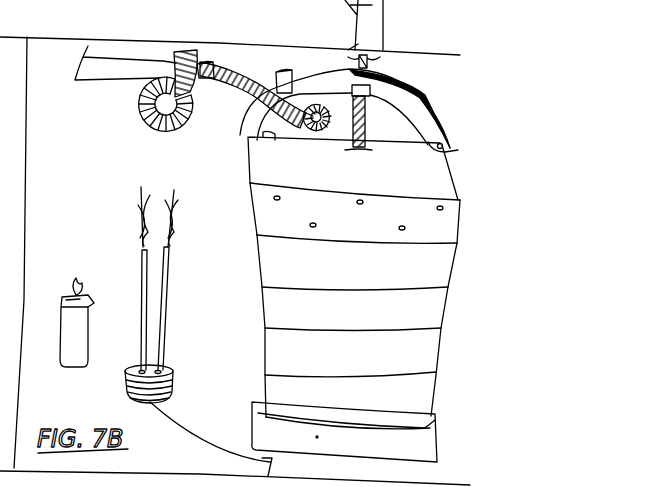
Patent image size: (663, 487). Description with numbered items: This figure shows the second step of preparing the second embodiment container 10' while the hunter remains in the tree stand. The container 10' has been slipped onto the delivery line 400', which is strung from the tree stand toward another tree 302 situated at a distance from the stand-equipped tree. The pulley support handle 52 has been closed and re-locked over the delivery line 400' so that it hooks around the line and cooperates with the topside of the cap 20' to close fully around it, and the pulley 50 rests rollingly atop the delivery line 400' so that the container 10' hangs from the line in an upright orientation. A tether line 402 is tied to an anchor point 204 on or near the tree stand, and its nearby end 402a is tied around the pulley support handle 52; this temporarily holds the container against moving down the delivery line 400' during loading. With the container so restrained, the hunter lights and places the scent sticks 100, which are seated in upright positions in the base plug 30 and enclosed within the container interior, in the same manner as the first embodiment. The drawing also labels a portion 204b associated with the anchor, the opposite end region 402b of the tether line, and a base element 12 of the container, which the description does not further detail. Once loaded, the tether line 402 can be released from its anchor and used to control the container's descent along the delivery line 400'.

The tree 302 is at (333, 25).
The anchor point 204 is at (133, 70).
The tether line end 402a is at (137, 108).
The pipe outlet fitting 204b is at (213, 97).
The tether line 402 is at (240, 86).
The flexible hose second end 402b is at (242, 135).
The pulley support handle 52 is at (413, 92).
The pulley 50 is at (358, 108).
The delivery line 400' is at (344, 160).
The cap 20' is at (332, 195).
The container 10' is at (337, 332).
The base 12 is at (260, 423).
The scent sticks 100 is at (147, 287).
The base plug 30 is at (181, 377).